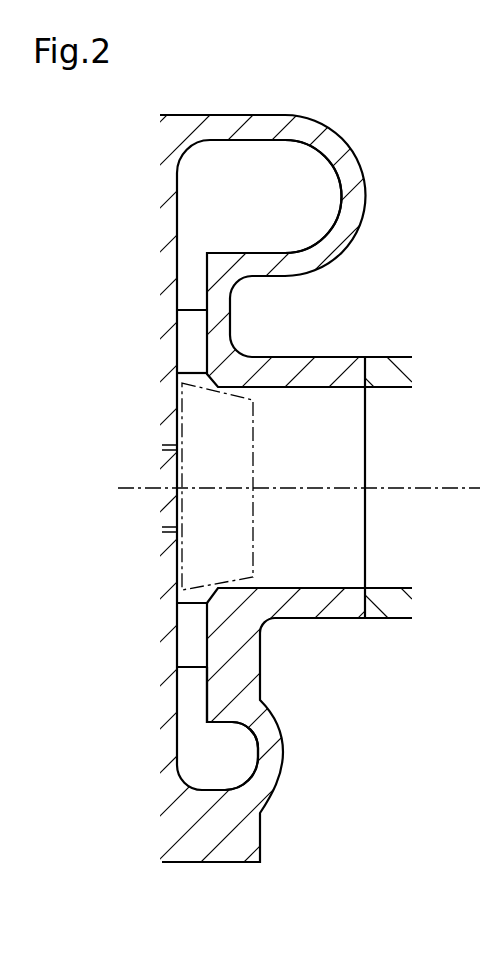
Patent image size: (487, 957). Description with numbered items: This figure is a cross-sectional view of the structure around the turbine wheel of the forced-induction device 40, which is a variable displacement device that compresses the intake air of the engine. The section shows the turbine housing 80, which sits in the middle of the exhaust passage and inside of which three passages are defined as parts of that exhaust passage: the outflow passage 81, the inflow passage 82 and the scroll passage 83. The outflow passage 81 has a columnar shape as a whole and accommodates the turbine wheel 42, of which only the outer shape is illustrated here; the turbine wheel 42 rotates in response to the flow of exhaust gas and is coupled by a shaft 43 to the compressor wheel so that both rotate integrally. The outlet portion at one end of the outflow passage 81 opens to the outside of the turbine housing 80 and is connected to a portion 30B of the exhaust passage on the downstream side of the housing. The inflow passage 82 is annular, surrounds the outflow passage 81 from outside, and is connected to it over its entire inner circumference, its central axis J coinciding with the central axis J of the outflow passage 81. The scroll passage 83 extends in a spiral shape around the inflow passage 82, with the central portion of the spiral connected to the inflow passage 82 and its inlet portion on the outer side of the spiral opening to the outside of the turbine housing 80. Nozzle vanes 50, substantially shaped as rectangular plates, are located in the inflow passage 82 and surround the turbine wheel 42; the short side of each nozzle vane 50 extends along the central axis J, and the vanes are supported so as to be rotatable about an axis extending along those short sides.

The forced-induction device 40 is at (429, 162).
The turbine housing 80 is at (313, 122).
The scroll passage 83 is at (324, 177).
The portion of the exhaust passage 30B is at (397, 583).
The outflow passage 81 is at (329, 579).
The inflow passage 82 is at (212, 684).
The nozzle vanes 50 is at (186, 344).
The central axis J is at (132, 488).
The turbine wheel 42 is at (253, 446).
The shaft 43 is at (166, 528).